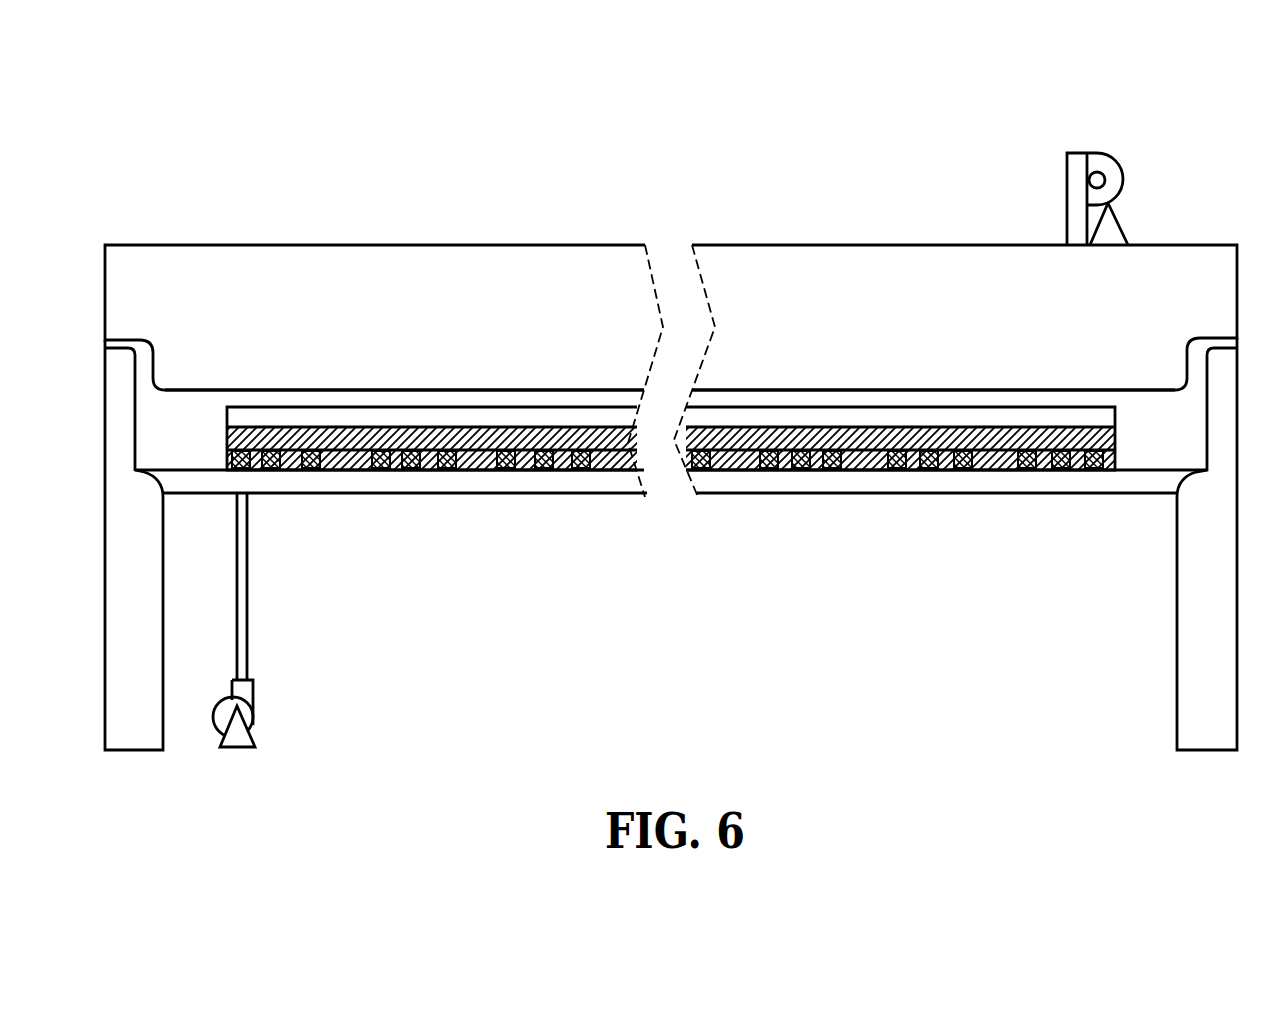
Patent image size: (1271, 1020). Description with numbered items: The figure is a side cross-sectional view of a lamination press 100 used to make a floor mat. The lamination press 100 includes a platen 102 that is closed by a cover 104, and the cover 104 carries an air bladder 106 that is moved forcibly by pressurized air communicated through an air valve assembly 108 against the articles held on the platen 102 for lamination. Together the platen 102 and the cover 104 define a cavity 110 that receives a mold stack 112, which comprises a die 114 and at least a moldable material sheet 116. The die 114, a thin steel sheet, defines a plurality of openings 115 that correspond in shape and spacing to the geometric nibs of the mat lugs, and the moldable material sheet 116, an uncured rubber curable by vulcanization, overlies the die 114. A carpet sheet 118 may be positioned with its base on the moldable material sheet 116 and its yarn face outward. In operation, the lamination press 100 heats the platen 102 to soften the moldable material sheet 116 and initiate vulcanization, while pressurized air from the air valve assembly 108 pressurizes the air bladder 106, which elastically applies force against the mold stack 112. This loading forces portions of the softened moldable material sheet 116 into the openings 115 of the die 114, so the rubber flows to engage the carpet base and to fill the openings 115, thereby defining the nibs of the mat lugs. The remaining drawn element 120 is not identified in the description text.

The lamination press 100 is at (270, 200).
The platen 102 is at (472, 483).
The cover 104 is at (173, 243).
The air bladder 106 is at (343, 390).
The air valve assembly 108 is at (1090, 153).
The cavity 110 is at (1142, 430).
The mold stack 112 is at (215, 468).
The die 114 is at (312, 472).
The openings 115 is at (350, 472).
The moldable material sheet 116 is at (300, 472).
The carpet sheet 118 is at (457, 425).
The base plate 120 is at (573, 470).